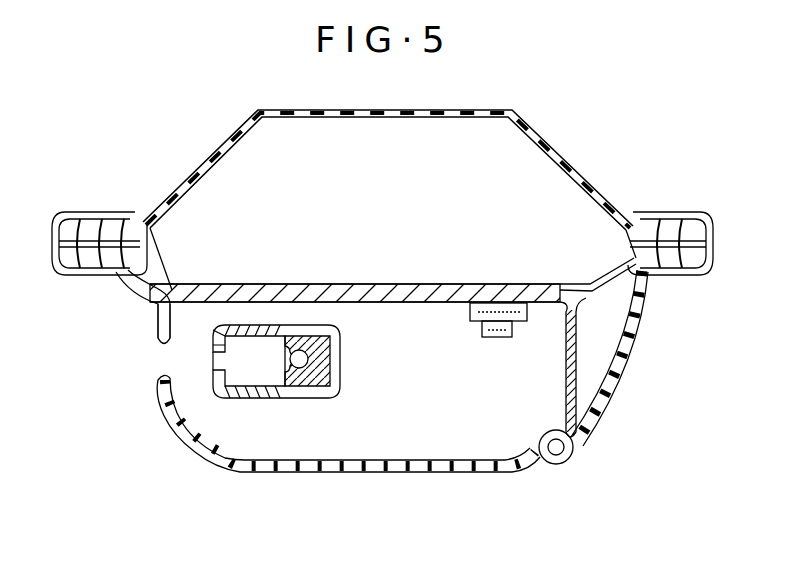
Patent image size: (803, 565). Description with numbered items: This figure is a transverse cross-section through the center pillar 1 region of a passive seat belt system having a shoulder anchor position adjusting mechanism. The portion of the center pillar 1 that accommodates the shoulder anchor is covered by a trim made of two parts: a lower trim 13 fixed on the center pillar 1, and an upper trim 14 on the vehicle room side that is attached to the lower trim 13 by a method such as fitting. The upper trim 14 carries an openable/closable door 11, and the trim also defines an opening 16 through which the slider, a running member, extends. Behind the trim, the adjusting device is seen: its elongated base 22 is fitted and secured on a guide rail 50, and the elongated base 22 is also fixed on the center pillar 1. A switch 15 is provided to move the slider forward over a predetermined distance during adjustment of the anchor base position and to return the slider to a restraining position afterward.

The center pillar 1 is at (530, 122).
The door 11 is at (525, 475).
The lower trim 13 is at (580, 355).
The upper trim 14 is at (624, 382).
The switch 15 is at (495, 303).
The opening 16 is at (170, 357).
The elongated base 22 is at (322, 325).
The guide rail 50 is at (265, 325).